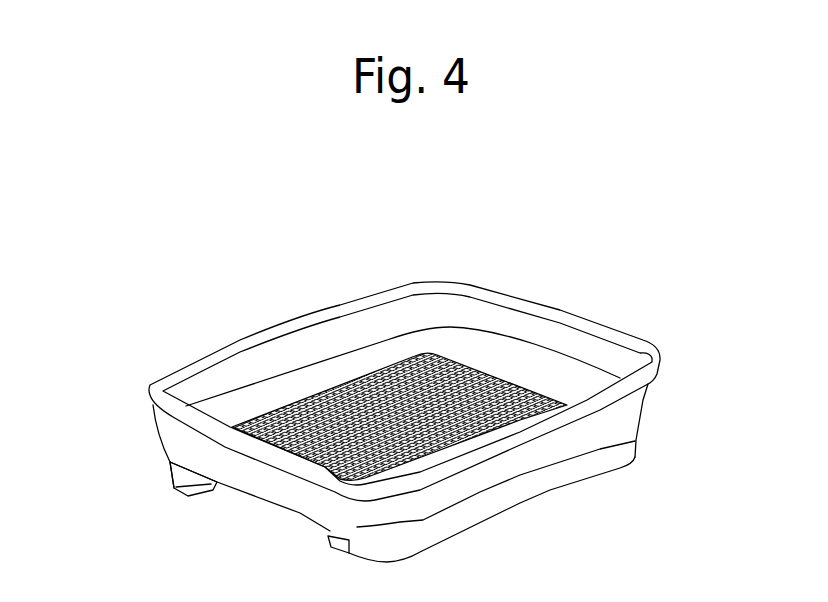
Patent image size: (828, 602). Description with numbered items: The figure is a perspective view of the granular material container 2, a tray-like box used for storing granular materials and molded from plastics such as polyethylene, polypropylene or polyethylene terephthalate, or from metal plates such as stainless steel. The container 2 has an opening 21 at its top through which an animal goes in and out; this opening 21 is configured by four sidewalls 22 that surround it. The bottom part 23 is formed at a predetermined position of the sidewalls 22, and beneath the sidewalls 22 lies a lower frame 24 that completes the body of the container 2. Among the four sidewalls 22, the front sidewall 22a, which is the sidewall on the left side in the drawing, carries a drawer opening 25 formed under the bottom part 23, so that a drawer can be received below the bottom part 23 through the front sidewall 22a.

The granular material container 2 is at (341, 234).
The opening 21 is at (320, 355).
The sidewalls 22 is at (617, 428).
The front sidewall 22a is at (177, 443).
The bottom part 23 is at (424, 357).
The lower frame 24 is at (175, 492).
The drawer opening 25 is at (272, 506).